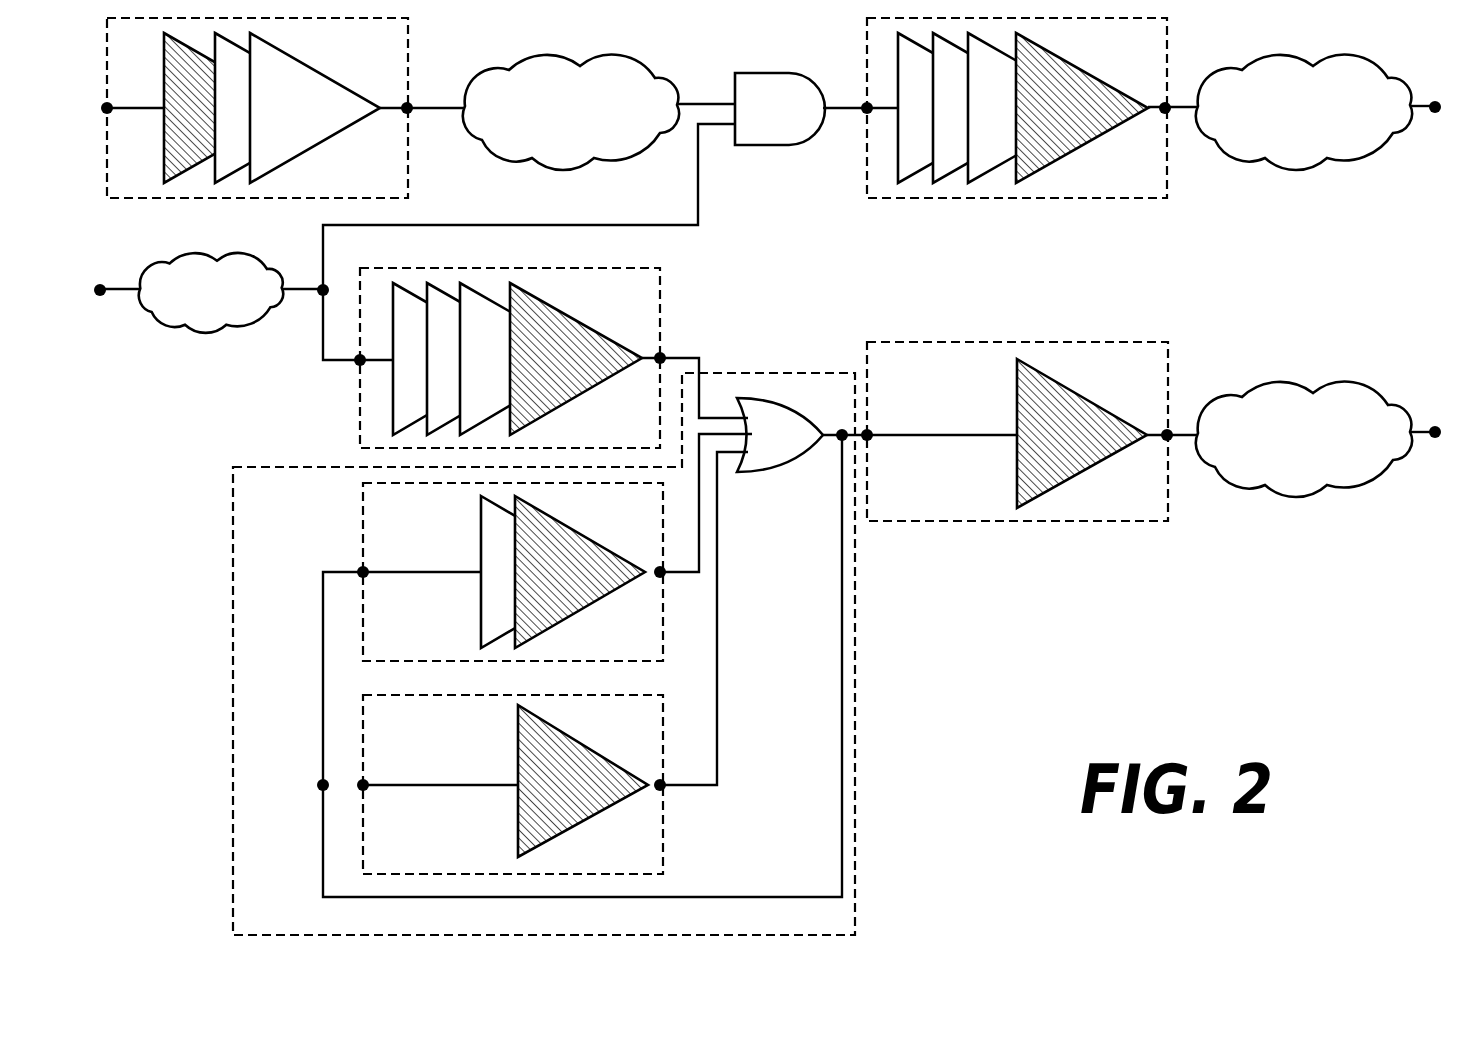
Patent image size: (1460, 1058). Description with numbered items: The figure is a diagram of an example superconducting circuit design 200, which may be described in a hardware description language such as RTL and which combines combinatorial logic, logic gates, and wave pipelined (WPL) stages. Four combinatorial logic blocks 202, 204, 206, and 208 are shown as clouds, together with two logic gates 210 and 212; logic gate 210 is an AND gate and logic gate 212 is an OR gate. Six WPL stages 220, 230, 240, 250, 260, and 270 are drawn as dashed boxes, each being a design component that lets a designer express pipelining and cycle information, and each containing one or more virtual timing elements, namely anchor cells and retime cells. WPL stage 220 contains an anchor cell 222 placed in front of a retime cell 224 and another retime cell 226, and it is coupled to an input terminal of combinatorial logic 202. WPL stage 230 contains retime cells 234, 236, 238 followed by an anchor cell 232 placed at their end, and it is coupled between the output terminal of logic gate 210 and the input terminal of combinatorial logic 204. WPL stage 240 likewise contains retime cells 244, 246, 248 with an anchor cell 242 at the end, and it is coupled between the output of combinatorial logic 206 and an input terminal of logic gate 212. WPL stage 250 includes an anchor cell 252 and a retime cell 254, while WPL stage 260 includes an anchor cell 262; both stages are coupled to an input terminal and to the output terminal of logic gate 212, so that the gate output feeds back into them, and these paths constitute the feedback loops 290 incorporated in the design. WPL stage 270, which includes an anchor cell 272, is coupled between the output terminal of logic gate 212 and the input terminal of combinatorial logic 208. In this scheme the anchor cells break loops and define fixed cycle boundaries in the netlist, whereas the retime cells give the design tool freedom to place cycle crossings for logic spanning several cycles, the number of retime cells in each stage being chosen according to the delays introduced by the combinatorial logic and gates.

The superconducting circuit design 200 is at (1195, 694).
The combinatorial logic 202 is at (586, 126).
The combinatorial logic 204 is at (1324, 126).
The combinatorial logic 206 is at (224, 308).
The combinatorial logic 208 is at (1317, 455).
The logic gate 210 is at (787, 122).
The logic gate 212 is at (793, 450).
The WPL stage 220 is at (408, 38).
The anchor cell 222 is at (185, 183).
The retime cell 224 is at (237, 183).
The retime cell 226 is at (273, 183).
The WPL stage 230 is at (1167, 181).
The anchor cell 232 is at (1030, 183).
The retime cell 234 is at (910, 183).
The retime cell 236 is at (945, 183).
The retime cell 238 is at (980, 183).
The WPL stage 240 is at (660, 290).
The anchor cell 242 is at (535, 283).
The retime cell 244 is at (407, 283).
The retime cell 246 is at (441, 283).
The retime cell 248 is at (478, 283).
The WPL stage 250 is at (363, 528).
The anchor cell 252 is at (610, 551).
The retime cell 254 is at (481, 519).
The WPL stage 260 is at (363, 740).
The anchor cell 262 is at (518, 741).
The WPL stage 270 is at (1168, 346).
The anchor cell 272 is at (1100, 407).
The feedback loops 290 is at (855, 650).